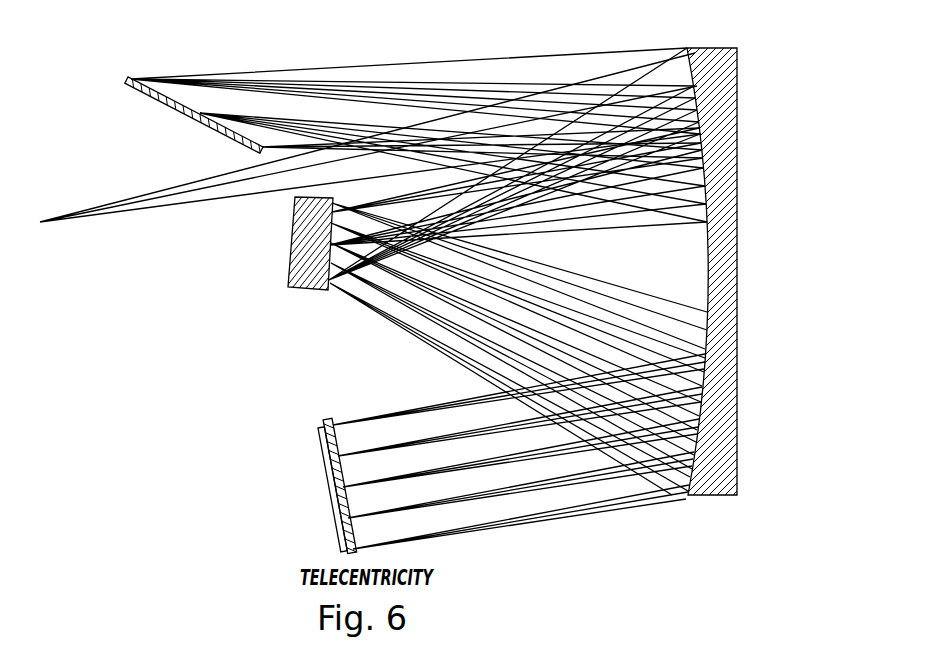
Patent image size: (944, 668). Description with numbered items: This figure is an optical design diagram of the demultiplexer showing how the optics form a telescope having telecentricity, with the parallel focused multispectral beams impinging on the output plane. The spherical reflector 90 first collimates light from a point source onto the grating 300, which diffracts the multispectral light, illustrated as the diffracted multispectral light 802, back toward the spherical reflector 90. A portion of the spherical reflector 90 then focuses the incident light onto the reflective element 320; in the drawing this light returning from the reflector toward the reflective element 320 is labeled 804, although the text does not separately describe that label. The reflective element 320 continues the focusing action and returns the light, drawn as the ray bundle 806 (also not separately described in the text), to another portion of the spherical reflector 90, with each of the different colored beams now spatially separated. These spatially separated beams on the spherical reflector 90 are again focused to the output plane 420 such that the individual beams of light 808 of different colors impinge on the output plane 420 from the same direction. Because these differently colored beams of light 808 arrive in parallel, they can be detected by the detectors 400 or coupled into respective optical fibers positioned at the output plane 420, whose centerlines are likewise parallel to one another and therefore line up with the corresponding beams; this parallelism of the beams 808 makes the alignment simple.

The spherical reflector 90 is at (739, 347).
The grating 300 is at (183, 113).
The reflective element 320 is at (292, 243).
The detectors 400 is at (318, 514).
The output plane 420 is at (328, 421).
The diffracted multispectral light 802 is at (416, 63).
The ray bundle from reflector to element 320 804 is at (606, 230).
The ray bundle from element 320 to reflector 806 is at (368, 313).
The beams of light 808 is at (413, 412).